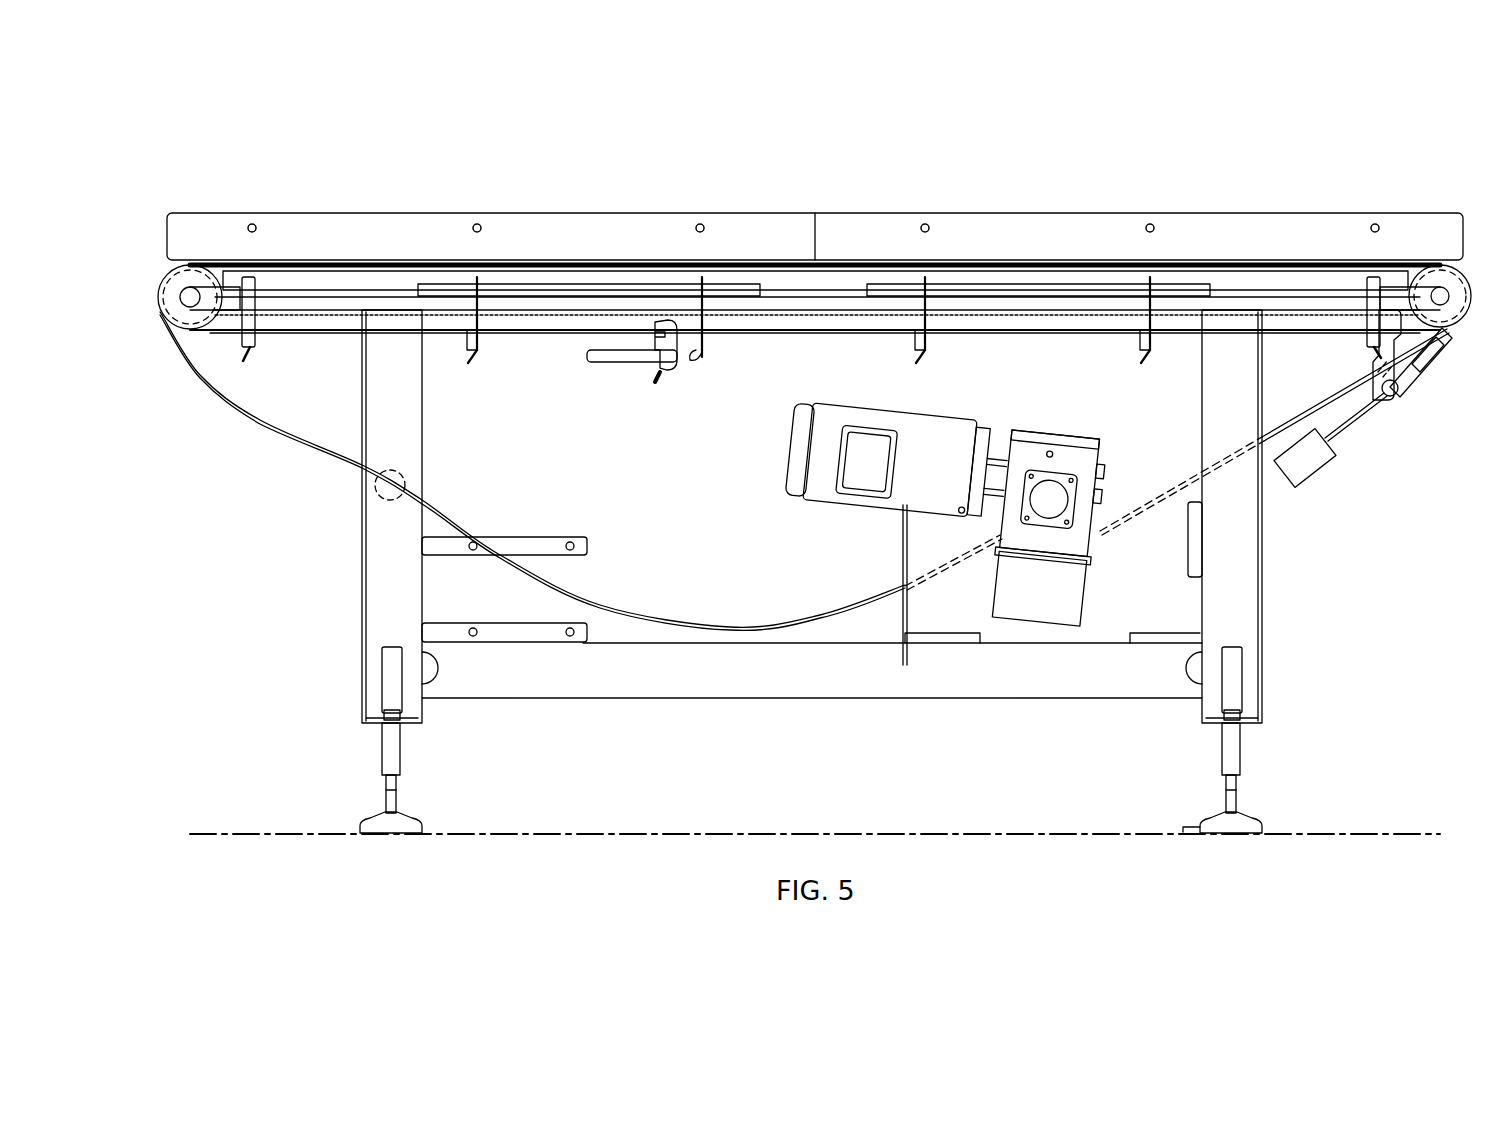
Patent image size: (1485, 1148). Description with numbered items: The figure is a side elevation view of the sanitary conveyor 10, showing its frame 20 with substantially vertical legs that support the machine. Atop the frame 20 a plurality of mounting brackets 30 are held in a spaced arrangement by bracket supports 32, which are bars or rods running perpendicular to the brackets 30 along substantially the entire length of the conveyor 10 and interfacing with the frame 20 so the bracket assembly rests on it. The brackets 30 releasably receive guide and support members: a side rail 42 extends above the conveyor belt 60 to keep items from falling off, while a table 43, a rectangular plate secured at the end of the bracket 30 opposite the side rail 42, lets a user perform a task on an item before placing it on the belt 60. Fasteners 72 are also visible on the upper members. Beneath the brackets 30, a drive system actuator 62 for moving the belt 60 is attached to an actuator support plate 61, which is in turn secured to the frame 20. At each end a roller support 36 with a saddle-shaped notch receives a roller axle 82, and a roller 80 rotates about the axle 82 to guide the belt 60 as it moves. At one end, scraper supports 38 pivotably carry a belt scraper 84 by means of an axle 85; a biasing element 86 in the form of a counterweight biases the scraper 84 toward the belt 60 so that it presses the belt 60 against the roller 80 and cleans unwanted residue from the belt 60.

The sanitary conveyor 10 is at (535, 183).
The frame 20 is at (355, 632).
The mounting brackets 30 is at (255, 345).
The bracket supports 32 is at (787, 330).
The roller support 36 is at (232, 330).
The scraper supports 38 is at (1392, 405).
The side rail 42 is at (312, 218).
The table 43 is at (583, 283).
The conveyor belt 60 is at (610, 600).
The actuator support plate 61 is at (1160, 598).
The actuator 62 is at (835, 487).
The fasteners 72 is at (254, 224).
The roller 80 is at (176, 312).
The roller axle 82 is at (187, 292).
The belt scraper 84 is at (1420, 400).
The axle 85 is at (1394, 398).
The biasing element 86 is at (1312, 480).